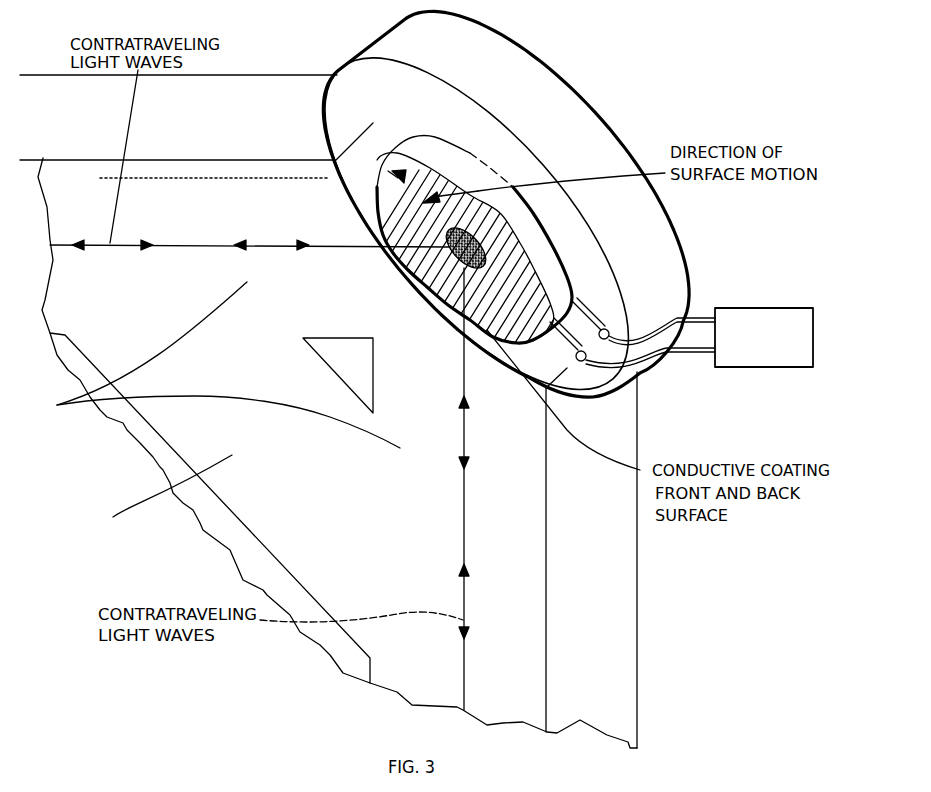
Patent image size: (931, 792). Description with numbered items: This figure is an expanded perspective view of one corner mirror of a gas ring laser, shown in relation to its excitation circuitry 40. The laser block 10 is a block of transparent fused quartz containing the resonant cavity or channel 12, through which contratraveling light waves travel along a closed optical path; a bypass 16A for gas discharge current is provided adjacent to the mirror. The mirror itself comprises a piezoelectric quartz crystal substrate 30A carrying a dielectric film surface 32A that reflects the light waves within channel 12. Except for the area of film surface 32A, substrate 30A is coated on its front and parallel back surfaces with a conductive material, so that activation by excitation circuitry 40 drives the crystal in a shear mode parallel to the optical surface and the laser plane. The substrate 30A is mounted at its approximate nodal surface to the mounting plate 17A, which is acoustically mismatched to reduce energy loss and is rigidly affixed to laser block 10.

The laser block 10 is at (599, 616).
The resonant cavity or channel 12 is at (60, 405).
The bypass 16A is at (116, 516).
The mounting plate 17A is at (587, 153).
The piezoelectric quartz crystal substrate 30A is at (553, 242).
The dielectric film surface 32A is at (487, 264).
The excitation circuitry 40 is at (681, 333).